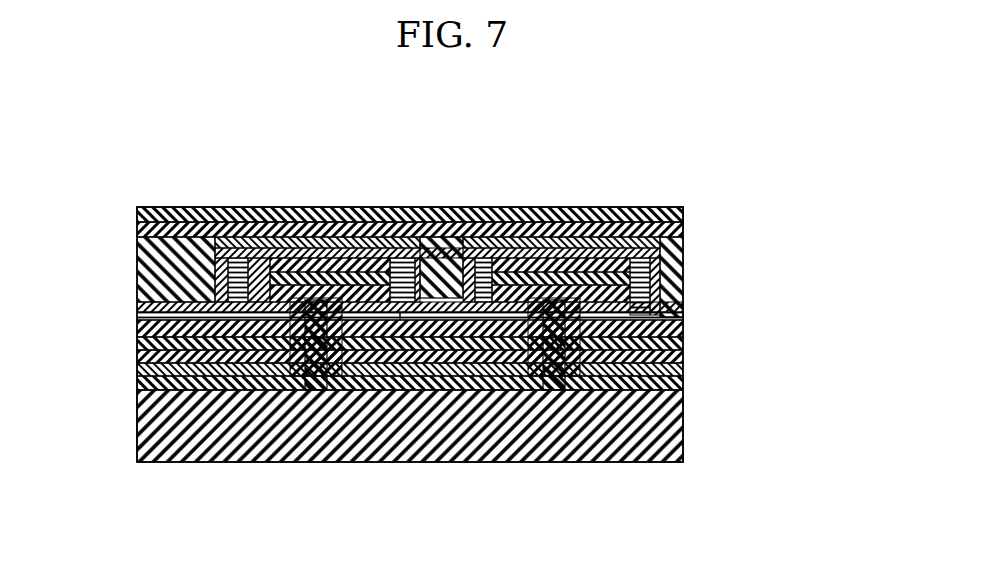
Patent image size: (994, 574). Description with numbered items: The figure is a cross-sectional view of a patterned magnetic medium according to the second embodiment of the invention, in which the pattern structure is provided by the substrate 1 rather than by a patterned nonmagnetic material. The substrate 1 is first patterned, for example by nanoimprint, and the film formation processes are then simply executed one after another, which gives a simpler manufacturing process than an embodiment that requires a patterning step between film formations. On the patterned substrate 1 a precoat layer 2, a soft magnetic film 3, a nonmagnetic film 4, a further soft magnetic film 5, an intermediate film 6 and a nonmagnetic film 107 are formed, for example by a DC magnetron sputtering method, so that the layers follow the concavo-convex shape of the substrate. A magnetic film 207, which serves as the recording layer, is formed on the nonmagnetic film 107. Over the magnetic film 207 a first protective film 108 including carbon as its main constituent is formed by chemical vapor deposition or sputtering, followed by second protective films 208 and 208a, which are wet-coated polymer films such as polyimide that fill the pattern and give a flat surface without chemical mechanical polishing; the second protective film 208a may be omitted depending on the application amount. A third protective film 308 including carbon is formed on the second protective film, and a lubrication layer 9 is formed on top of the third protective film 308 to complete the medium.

The substrate 1 is at (650, 440).
The precoat layer 2 is at (683, 384).
The soft magnetic film 3 is at (683, 365).
The nonmagnetic film 4 is at (342, 392).
The soft magnetic film 5 is at (433, 390).
The intermediate film 6 is at (477, 390).
The lubrication layer 9 is at (667, 207).
The nonmagnetic film 107 is at (683, 325).
The first protective film 108 is at (185, 315).
The magnetic film 207 is at (575, 225).
The second protective film 208 is at (683, 273).
The second protective film 208a is at (375, 240).
The third protective film 308 is at (233, 217).